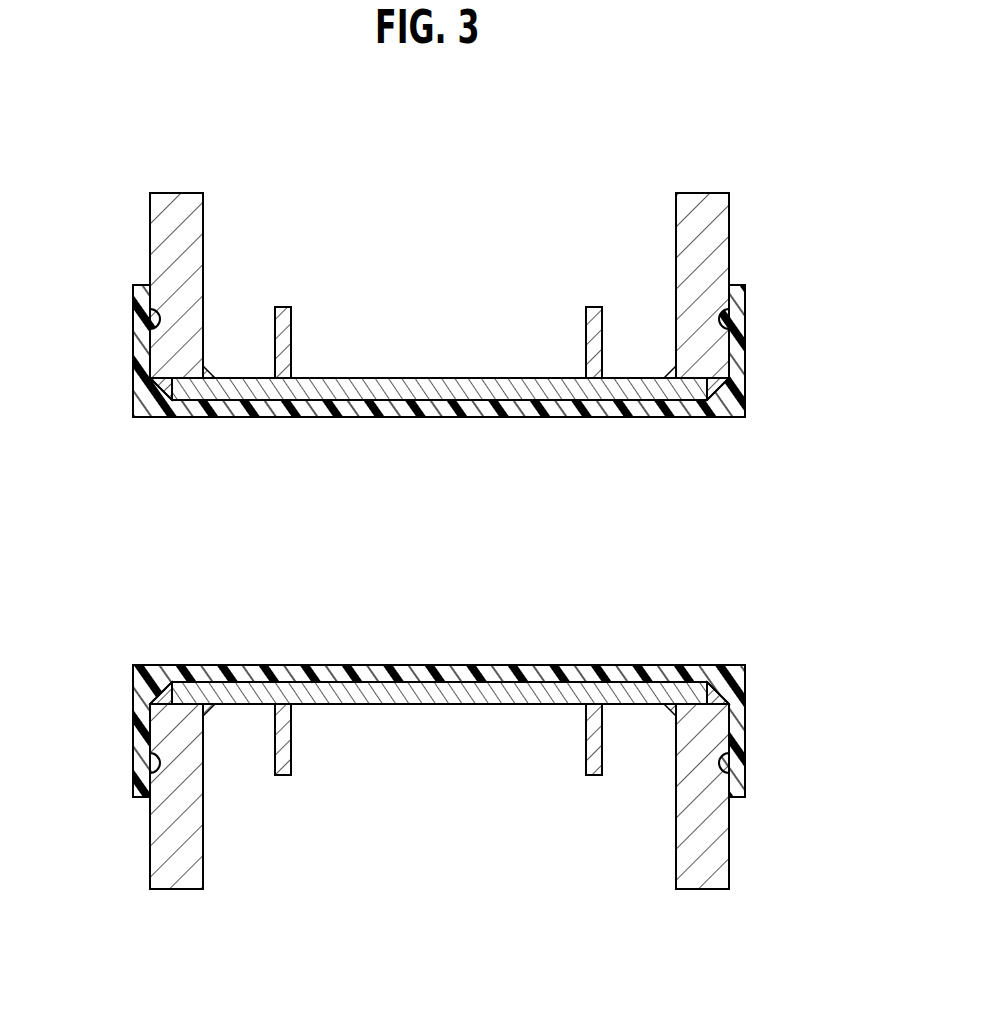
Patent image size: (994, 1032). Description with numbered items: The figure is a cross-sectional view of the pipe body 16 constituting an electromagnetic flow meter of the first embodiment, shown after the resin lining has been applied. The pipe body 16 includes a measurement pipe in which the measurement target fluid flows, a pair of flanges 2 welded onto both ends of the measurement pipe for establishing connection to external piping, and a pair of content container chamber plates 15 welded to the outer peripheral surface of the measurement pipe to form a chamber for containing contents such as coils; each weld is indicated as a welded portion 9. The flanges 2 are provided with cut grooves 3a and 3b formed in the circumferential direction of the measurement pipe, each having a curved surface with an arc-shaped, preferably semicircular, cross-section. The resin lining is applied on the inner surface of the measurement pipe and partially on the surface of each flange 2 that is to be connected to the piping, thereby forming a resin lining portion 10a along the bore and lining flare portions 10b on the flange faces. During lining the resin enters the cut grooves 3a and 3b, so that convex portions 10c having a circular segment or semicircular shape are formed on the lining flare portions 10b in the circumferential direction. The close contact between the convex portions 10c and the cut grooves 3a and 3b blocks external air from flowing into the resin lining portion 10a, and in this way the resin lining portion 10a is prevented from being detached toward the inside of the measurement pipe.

The flange 2 is at (731, 220).
The cut groove 3a is at (718, 322).
The cut groove 3b is at (158, 310).
The welded portion 9 is at (212, 372).
The resin lining portion 10a is at (417, 407).
The lining flare portion 10b is at (745, 360).
The convex portion 10c is at (134, 316).
The content container chamber plate 15 is at (283, 305).
The pipe body 16 is at (400, 705).